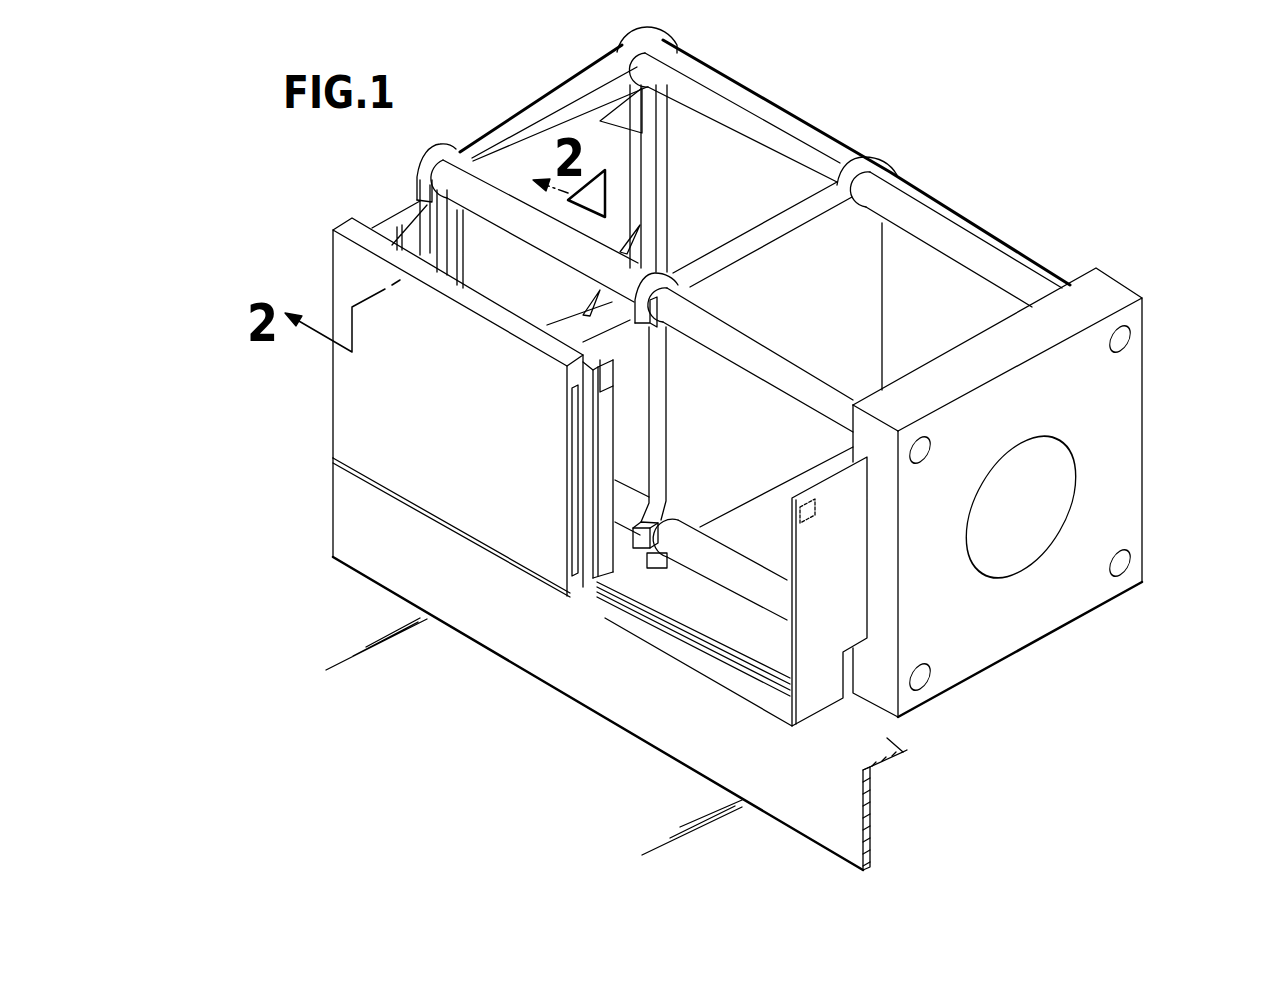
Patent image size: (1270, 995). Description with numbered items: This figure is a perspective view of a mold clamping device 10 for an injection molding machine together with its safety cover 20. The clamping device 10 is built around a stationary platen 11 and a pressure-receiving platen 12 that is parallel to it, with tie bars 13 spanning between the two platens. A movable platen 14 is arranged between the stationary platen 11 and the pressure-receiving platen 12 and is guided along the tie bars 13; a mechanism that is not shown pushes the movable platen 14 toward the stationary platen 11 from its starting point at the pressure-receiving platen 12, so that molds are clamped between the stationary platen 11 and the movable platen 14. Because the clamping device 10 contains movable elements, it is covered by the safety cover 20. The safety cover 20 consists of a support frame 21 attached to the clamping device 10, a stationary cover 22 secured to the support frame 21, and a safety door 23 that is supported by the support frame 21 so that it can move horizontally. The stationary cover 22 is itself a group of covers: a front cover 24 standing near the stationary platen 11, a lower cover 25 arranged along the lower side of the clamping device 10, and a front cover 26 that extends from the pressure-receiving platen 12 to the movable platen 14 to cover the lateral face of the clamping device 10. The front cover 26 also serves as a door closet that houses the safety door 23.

The clamping device 10 is at (1122, 142).
The stationary platen 11 is at (1012, 632).
The pressure-receiving platen 12 is at (535, 113).
The tie bars 13 is at (977, 253).
The movable platen 14 is at (753, 240).
The safety cover 20 is at (300, 477).
The support frame 21 is at (393, 212).
The stationary cover 22 is at (642, 823).
The safety door 23 is at (578, 456).
The front cover 24 is at (807, 647).
The lower cover 25 is at (600, 675).
The front cover 26 is at (530, 538).